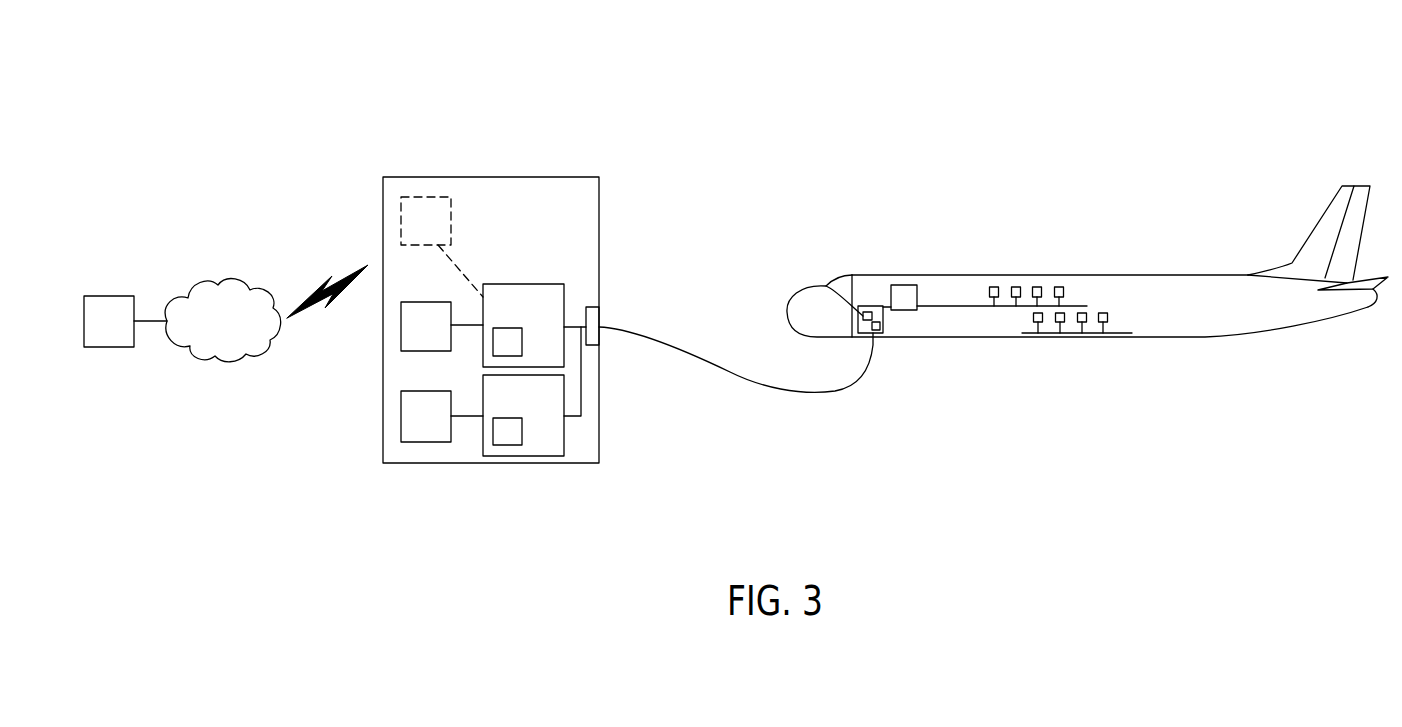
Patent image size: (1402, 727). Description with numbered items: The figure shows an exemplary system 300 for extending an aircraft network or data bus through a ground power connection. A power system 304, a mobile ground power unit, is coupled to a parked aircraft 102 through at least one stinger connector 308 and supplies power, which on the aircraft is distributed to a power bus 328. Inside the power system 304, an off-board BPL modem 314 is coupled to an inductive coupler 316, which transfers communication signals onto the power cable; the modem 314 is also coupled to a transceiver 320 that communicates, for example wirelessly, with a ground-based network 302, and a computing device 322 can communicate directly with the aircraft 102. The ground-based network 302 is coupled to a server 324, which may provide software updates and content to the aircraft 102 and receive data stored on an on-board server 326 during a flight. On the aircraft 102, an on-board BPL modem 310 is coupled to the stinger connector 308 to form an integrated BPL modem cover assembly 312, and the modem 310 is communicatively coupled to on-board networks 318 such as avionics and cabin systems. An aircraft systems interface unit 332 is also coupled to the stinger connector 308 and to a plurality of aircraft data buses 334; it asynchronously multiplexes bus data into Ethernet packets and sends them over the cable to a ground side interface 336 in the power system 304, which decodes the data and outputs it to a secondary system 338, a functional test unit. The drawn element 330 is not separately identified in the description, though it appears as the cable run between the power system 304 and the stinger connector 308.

The system 300 is at (953, 65).
The aircraft 102 is at (1185, 275).
The ground-based network 302 is at (230, 360).
The power system 304 is at (531, 177).
The stinger connector 308 is at (592, 307).
The on-board BPL modem 310 is at (825, 287).
The integrated BPL modem cover assembly 312 is at (888, 335).
The off-board BPL modem 314 is at (531, 284).
The inductive coupler 316 is at (493, 350).
The on-board networks 318 is at (994, 287).
The transceiver 320 is at (407, 338).
The computing device 322 is at (426, 197).
The server 324 is at (91, 333).
The on-board server 326 is at (903, 285).
The power bus 328 is at (987, 331).
The cable 330 is at (802, 393).
The aircraft systems interface unit 332 is at (507, 445).
The aircraft data buses 334 is at (1088, 312).
The ground side interface 336 is at (548, 456).
The secondary system 338 is at (407, 430).